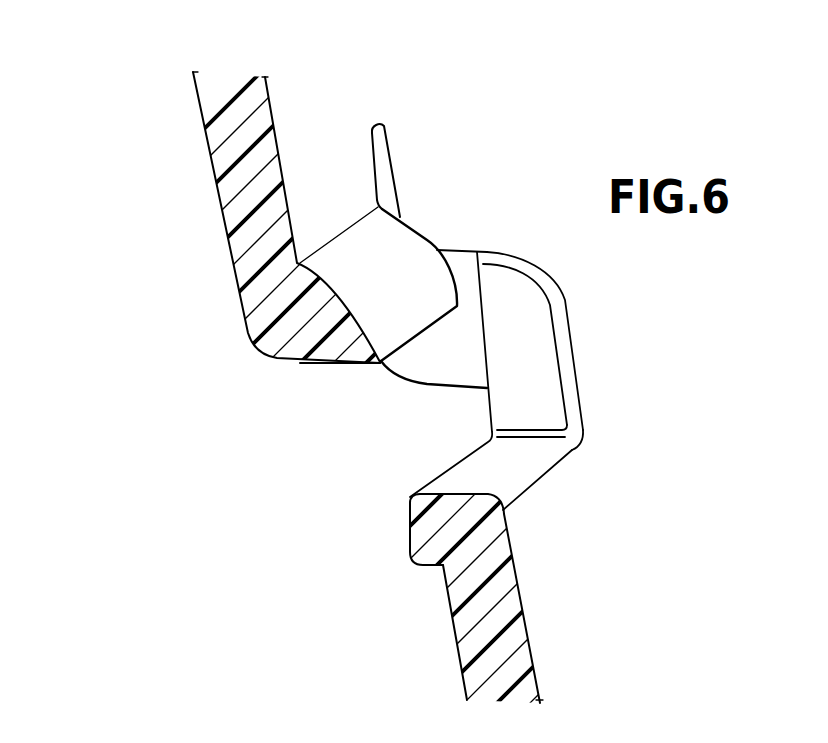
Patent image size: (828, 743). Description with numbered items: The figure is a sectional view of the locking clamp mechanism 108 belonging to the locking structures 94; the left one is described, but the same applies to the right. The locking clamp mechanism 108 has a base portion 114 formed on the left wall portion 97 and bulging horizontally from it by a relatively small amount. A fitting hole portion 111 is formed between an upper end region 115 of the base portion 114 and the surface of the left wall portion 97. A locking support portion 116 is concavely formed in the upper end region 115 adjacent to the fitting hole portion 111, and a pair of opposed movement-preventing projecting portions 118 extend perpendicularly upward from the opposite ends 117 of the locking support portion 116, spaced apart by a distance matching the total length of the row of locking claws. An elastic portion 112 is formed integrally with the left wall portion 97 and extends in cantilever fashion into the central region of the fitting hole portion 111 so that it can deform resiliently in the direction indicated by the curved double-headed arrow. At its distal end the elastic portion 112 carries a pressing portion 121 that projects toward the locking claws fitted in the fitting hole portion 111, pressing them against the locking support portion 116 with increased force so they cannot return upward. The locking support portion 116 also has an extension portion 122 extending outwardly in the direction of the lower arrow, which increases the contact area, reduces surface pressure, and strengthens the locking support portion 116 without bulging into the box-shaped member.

The locking structures 94 is at (138, 282).
The left wall portion 97 is at (425, 110).
The locking clamp mechanism 108 is at (493, 305).
The fitting hole portion 111 is at (448, 376).
The elastic portion 112 is at (323, 361).
The base portion 114 is at (506, 595).
The upper end region 115 is at (607, 447).
The locking support portion 116 is at (487, 471).
The opposite ends 117 is at (533, 447).
The movement-preventing projecting portions 118 is at (533, 350).
The pressing portion 121 is at (421, 318).
The extension portion 122 is at (407, 520).